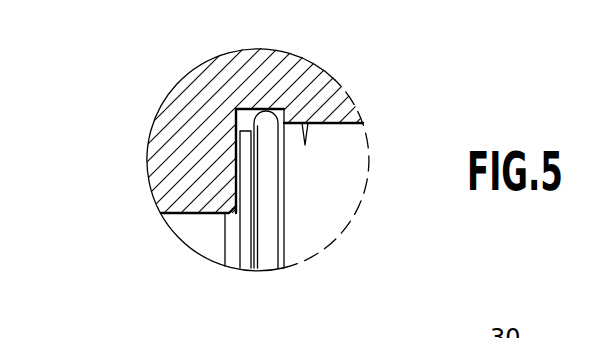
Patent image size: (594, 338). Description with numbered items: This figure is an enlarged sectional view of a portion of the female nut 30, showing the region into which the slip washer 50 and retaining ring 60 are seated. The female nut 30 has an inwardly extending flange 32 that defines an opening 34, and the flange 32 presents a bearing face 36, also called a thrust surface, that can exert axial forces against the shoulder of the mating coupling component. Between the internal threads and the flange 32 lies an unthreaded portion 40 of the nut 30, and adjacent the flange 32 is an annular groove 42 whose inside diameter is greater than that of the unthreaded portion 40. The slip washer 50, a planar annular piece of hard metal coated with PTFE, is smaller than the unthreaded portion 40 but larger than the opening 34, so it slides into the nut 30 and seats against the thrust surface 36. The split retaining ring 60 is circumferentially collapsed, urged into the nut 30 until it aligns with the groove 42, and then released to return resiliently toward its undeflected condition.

The female nut 30 is at (378, 98).
The flange 32 is at (196, 225).
The opening 34 is at (172, 216).
The bearing face 36 is at (236, 184).
The unthreaded portion 40 is at (328, 73).
The annular groove 42 is at (235, 122).
The slip washer 50 is at (248, 258).
The retaining ring 60 is at (283, 208).